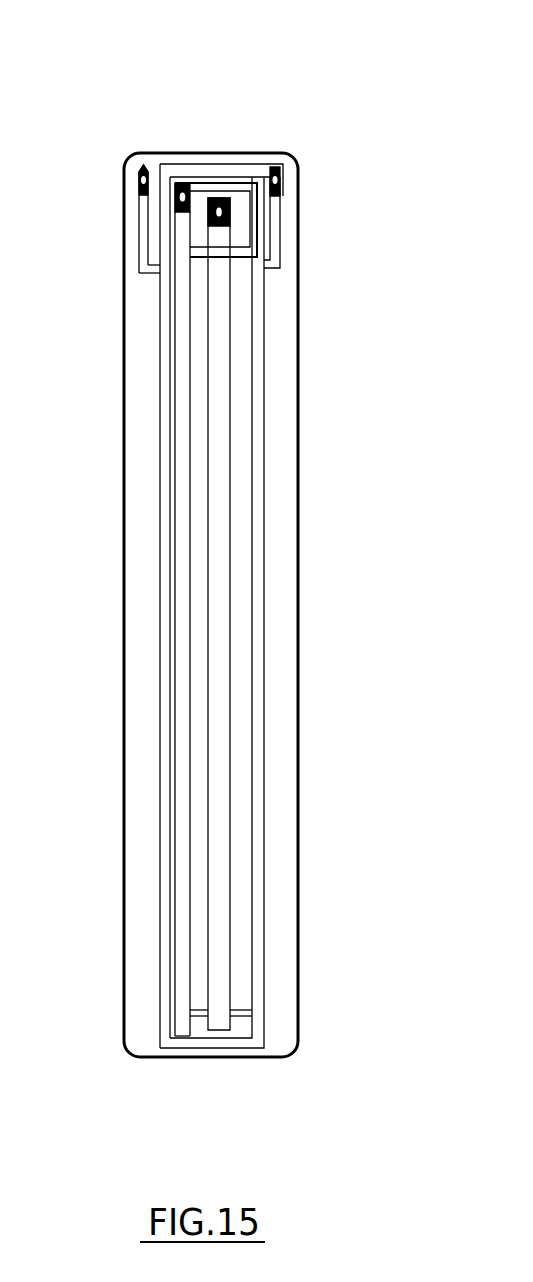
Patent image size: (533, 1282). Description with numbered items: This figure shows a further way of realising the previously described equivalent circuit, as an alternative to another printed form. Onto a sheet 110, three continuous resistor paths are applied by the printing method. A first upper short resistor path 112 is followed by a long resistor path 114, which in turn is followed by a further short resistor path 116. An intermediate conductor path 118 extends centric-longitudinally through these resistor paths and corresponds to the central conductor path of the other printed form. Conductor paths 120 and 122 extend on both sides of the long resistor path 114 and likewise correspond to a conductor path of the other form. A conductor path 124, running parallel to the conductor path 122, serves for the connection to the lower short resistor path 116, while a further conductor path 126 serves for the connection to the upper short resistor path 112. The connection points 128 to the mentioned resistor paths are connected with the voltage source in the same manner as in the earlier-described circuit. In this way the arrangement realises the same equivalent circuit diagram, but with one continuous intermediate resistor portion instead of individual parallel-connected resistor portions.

The sheet 110 is at (282, 472).
The first upper short resistor path 112 is at (200, 245).
The long resistor path 114 is at (195, 332).
The short resistor path 116 is at (195, 1021).
The intermediate conductor path 118 is at (222, 402).
The conductor path 120 is at (255, 434).
The conductor path 122 is at (179, 403).
The conductor path 124 is at (159, 470).
The further conductor path 126 is at (208, 184).
The connection points 128 is at (281, 172).